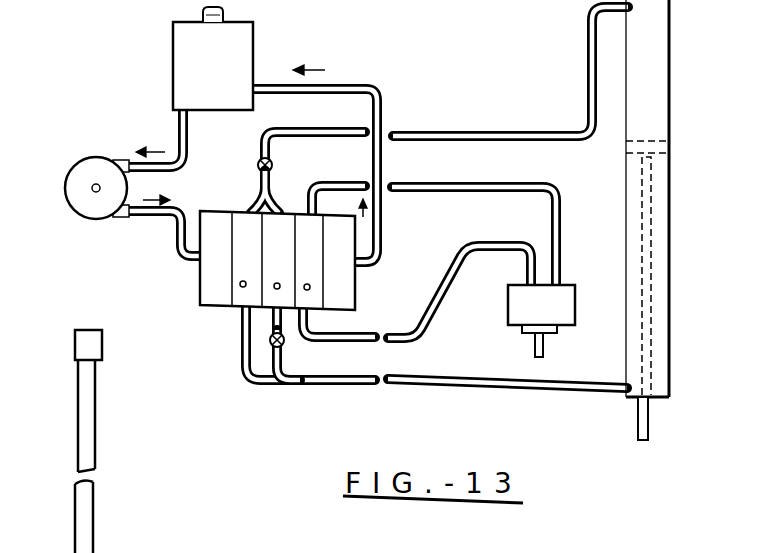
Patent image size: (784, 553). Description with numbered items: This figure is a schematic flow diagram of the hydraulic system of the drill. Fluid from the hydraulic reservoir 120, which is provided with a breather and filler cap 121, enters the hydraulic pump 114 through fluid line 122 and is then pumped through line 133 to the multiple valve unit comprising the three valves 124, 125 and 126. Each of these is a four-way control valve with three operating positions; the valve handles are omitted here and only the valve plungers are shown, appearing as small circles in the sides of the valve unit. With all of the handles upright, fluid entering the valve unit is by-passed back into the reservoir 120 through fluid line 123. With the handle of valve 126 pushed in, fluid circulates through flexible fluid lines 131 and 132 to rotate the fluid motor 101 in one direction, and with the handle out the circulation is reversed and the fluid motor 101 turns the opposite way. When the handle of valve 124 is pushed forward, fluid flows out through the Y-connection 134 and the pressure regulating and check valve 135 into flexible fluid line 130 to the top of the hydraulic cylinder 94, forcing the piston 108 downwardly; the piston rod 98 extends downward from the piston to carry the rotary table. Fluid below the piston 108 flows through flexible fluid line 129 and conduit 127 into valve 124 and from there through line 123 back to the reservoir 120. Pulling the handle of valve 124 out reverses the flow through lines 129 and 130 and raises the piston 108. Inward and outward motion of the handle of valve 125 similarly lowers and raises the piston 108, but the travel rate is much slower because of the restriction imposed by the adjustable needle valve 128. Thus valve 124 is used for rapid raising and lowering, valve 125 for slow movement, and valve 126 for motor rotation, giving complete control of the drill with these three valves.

The hydraulic cylinder 94 is at (672, 45).
The piston rod 98 is at (650, 418).
The fluid motor 101 is at (508, 318).
The piston 108 is at (676, 148).
The hydraulic pump 114 is at (72, 163).
The hydraulic reservoir 120 is at (172, 58).
The breather and filler cap 121 is at (225, 15).
The fluid line 122 is at (188, 140).
The fluid line 123 is at (350, 88).
The valve 124 is at (222, 288).
The valve 125 is at (258, 312).
The valve 126 is at (293, 312).
The conduit 127 is at (243, 372).
The adjustable needle valve 128 is at (270, 342).
The flexible fluid line 129 is at (445, 385).
The flexible fluid line 130 is at (585, 62).
The flexible fluid line 131 is at (548, 171).
The flexible fluid line 132 is at (467, 242).
The line 133 is at (175, 250).
The Y-connection 134 is at (255, 205).
The pressure regulating and check valve 135 is at (274, 163).